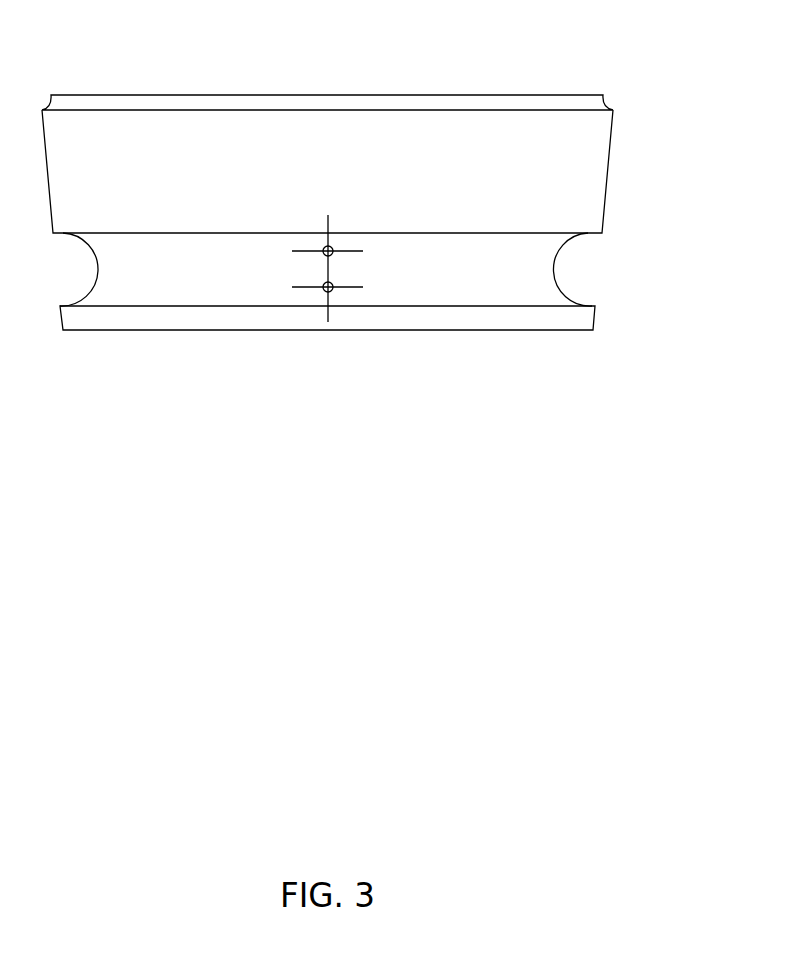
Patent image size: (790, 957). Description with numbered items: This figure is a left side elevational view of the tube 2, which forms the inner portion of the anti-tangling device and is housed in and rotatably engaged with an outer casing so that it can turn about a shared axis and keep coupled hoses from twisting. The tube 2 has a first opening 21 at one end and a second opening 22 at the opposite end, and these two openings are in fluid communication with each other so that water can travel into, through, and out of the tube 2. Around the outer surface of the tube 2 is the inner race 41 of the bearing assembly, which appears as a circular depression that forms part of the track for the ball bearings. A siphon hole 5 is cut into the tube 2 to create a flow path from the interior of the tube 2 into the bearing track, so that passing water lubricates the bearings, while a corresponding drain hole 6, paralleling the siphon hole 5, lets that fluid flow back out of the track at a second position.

The tube 2 is at (370, 218).
The first opening 21 is at (420, 76).
The second opening 22 is at (276, 347).
The inner race 41 is at (553, 270).
The siphon hole 5 is at (323, 249).
The drain hole 6 is at (333, 285).